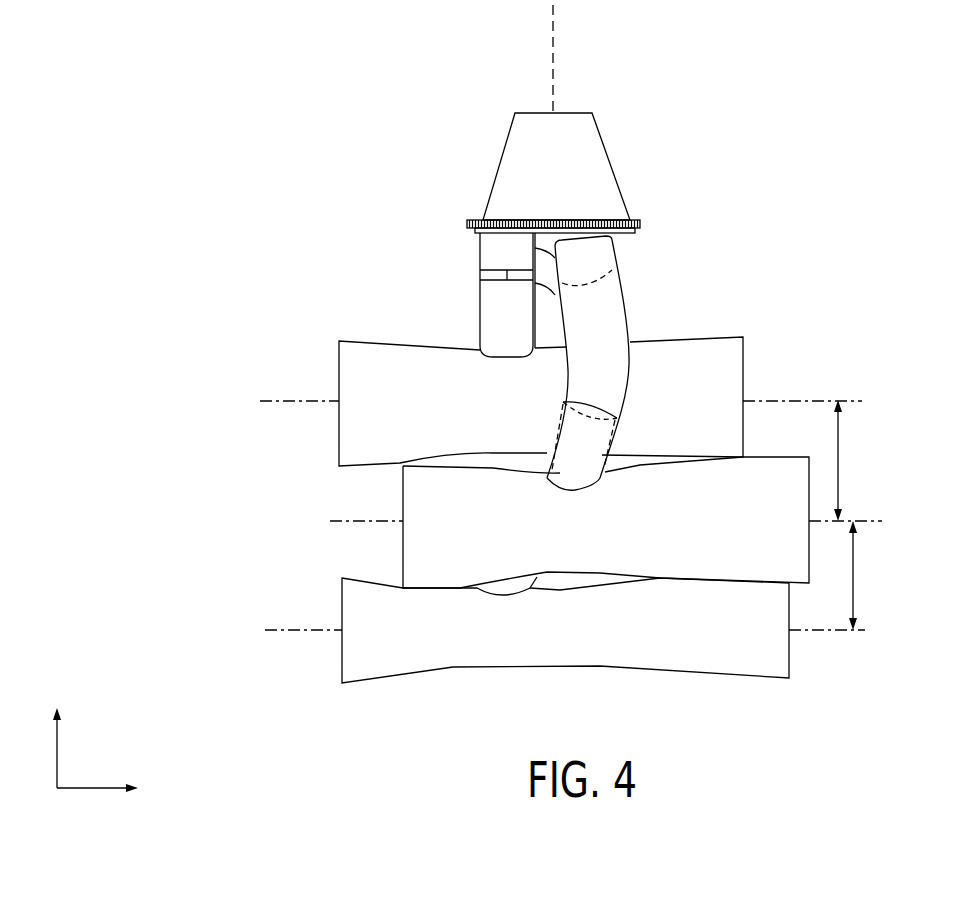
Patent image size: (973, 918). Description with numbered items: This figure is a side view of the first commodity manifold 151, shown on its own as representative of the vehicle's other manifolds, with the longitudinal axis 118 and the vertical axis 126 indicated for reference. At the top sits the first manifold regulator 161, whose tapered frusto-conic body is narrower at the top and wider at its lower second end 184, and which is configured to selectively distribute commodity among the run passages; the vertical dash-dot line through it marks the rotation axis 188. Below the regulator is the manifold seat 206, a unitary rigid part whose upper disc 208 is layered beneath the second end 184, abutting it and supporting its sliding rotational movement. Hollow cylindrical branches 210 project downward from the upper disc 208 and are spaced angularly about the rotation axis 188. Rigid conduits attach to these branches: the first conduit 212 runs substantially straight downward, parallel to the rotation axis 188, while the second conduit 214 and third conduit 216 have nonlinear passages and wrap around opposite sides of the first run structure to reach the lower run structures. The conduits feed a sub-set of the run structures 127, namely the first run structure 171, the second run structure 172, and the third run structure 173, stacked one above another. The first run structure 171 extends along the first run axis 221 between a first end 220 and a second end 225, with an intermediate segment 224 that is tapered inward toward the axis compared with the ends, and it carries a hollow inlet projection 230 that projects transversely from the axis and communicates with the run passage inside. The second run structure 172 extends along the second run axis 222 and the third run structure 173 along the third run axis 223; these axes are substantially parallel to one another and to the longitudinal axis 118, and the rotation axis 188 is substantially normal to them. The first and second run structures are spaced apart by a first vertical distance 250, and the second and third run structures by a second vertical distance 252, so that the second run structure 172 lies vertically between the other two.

The longitudinal axis 118 is at (90, 788).
The vertical axis 126 is at (57, 755).
The run structures 127 is at (835, 262).
The first commodity manifold 151 is at (358, 158).
The first manifold regulator 161 is at (572, 186).
The first run structure 171 is at (352, 353).
The second run structure 172 is at (403, 500).
The third run structure 173 is at (342, 598).
The second end 184 is at (490, 262).
The rotation axis 188 is at (553, 72).
The manifold seat 206 is at (600, 260).
The upper disc 208 is at (626, 232).
The branches 210 is at (490, 270).
The first conduit 212 is at (477, 280).
The second conduit 214 is at (613, 333).
The third conduit 216 is at (553, 318).
The first end 220 is at (339, 358).
The first run axis 221 is at (300, 401).
The second run axis 222 is at (365, 522).
The third run axis 223 is at (303, 630).
The intermediate segment 224 is at (535, 388).
The second end 225 is at (745, 357).
The hollow inlet projection 230 is at (512, 321).
The first vertical distance 250 is at (840, 462).
The second vertical distance 252 is at (855, 578).